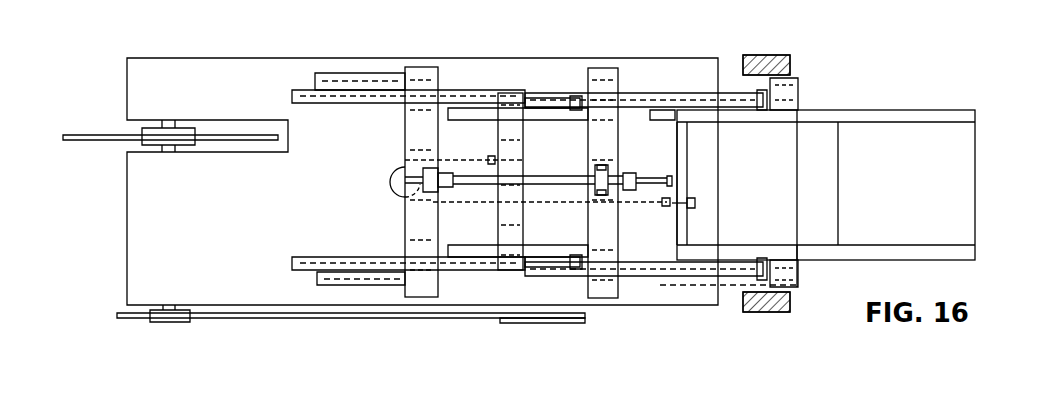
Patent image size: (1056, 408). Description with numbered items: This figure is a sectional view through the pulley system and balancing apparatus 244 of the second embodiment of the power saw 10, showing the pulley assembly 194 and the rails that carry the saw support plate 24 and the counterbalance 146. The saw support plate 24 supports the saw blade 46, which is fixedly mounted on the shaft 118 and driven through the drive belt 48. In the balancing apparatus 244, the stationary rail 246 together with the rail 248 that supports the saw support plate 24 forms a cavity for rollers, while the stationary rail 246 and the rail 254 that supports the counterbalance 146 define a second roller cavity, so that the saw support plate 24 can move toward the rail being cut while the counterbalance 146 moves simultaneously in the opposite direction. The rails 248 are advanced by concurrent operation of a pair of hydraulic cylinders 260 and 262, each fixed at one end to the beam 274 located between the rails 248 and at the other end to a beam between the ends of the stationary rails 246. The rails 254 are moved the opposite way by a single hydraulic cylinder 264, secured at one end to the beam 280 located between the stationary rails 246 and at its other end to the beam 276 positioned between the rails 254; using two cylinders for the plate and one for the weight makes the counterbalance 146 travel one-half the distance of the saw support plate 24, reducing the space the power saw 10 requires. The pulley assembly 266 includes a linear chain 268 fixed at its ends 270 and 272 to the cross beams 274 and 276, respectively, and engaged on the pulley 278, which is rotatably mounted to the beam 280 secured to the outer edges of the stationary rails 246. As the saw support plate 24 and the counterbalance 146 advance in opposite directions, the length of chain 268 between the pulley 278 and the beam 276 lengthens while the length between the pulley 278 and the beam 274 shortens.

The power saw 10 is at (480, 57).
The saw support plate 24 is at (208, 70).
The saw blade 46 is at (93, 142).
The drive belt 48 is at (352, 320).
The shaft 118 is at (160, 127).
The counterbalance 146 is at (928, 138).
The pulley assembly 194 is at (831, 266).
The balancing apparatus 244 is at (803, 100).
The stationary rail 246 is at (352, 88).
The rail 248 is at (321, 100).
The rail 254 is at (628, 120).
The hydraulic cylinder 260 is at (679, 100).
The hydraulic cylinder 262 is at (675, 272).
The hydraulic cylinder 264 is at (538, 186).
The pulley assembly 266 is at (396, 165).
The linear chain 268 is at (460, 201).
The end 270 is at (537, 163).
The end 272 is at (696, 203).
The beam 274 is at (515, 232).
The beam 276 is at (682, 167).
The pulley 278 is at (403, 197).
The beam 280 is at (410, 250).